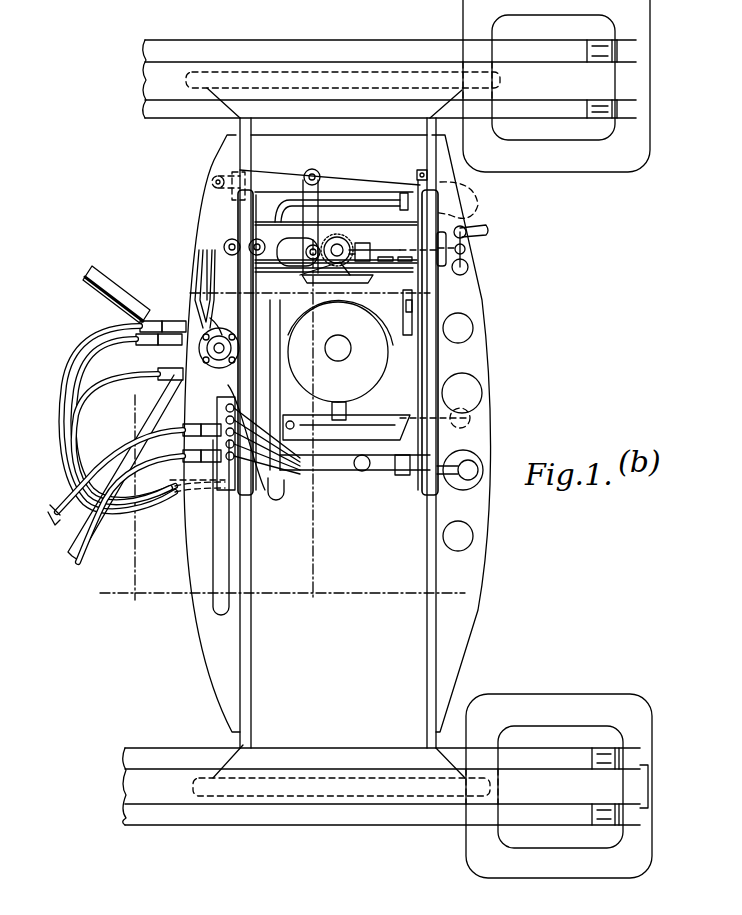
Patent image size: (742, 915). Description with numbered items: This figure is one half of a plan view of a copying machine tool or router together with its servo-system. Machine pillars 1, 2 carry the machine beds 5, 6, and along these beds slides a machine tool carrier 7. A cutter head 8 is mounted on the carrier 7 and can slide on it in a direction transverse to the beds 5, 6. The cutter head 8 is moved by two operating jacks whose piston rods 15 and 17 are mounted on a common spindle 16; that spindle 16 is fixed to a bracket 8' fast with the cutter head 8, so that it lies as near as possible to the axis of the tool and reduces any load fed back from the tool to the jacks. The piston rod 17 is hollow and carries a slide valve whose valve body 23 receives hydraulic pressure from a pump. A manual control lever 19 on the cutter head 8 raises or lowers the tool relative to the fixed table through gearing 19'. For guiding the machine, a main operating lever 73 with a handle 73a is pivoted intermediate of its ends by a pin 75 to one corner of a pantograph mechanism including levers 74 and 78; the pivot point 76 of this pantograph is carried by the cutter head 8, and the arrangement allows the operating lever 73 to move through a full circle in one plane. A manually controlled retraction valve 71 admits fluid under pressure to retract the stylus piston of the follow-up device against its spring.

The machine pillar 1 is at (603, 160).
The machine pillar 2 is at (520, 712).
The machine bed 5 is at (130, 765).
The machine bed 6 is at (320, 62).
The machine tool carrier 7 is at (408, 655).
The cutter head 8 is at (462, 427).
The bracket 8' is at (309, 372).
The piston rod 15 is at (55, 505).
The common spindle 16 is at (200, 348).
The piston rod 17 is at (107, 265).
The manual control lever 19 is at (479, 234).
The gearing 19' is at (330, 294).
The valve body 23 is at (177, 320).
The retraction valve 71 is at (403, 472).
The main operating lever 73 is at (375, 181).
The handle 73a is at (470, 192).
The lever 74 is at (318, 193).
The pin 75 is at (313, 169).
The pivot point 76 is at (315, 247).
The lever 78 is at (292, 250).